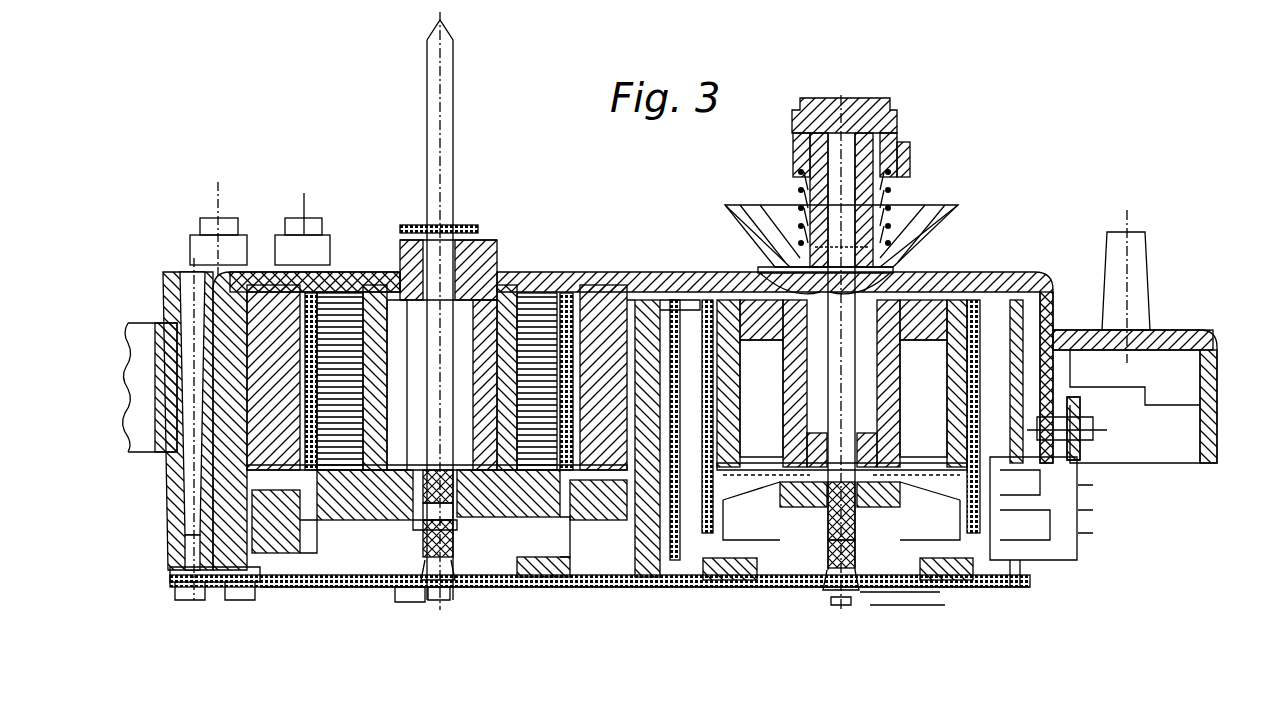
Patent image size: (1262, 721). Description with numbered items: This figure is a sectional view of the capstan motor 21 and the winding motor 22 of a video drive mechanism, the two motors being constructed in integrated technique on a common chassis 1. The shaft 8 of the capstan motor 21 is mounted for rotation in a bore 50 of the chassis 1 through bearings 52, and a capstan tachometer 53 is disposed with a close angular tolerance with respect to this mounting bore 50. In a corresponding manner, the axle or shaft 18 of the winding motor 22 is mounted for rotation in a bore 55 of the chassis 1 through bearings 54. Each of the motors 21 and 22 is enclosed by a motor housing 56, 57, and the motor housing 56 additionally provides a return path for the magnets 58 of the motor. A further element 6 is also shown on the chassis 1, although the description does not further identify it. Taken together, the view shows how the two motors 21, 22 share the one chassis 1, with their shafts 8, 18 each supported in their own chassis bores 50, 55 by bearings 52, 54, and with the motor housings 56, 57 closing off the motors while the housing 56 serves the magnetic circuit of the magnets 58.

The chassis 1 is at (143, 330).
The connector post 6 is at (1138, 265).
The shaft 8 is at (453, 78).
The axle or shaft 18 is at (841, 105).
The capstan motor 21 is at (388, 623).
The winding motor 22 is at (781, 617).
The bore 50 is at (470, 324).
The bearings 52 is at (480, 247).
The capstan tachometer 53 is at (222, 577).
The bearings 54 is at (897, 280).
The bore 55 is at (807, 280).
The motor housing 56 is at (638, 587).
The motor housing 57 is at (668, 420).
The magnets 58 is at (267, 303).